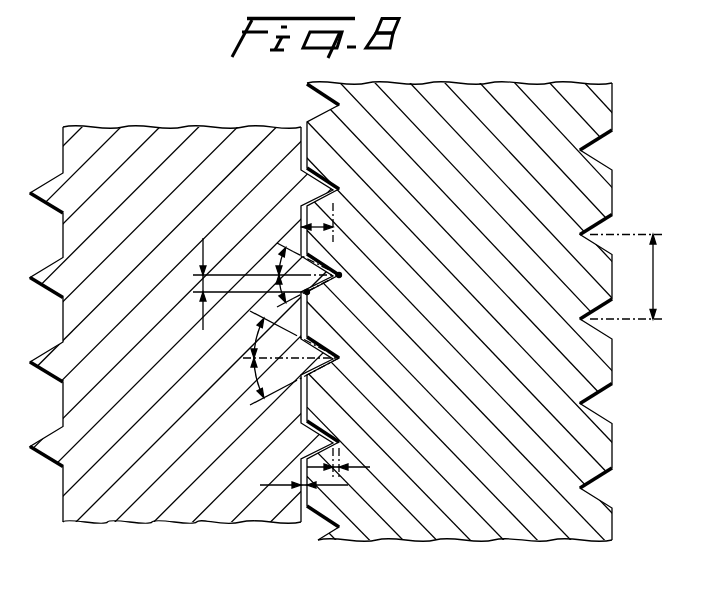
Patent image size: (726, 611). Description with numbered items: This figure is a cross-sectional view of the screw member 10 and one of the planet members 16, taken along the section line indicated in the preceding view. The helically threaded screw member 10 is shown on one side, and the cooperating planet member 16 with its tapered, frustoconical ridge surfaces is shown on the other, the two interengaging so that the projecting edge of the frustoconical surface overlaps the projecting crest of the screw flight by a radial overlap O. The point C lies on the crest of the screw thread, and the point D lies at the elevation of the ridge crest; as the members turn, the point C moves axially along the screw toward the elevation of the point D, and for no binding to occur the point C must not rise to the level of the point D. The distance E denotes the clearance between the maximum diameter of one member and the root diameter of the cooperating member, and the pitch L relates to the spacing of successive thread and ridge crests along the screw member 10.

The first toothed member 16 is at (173, 507).
The screw member 10 is at (485, 523).
The radial overlap O is at (333, 244).
The point D is at (341, 276).
The point C is at (309, 294).
The distance between maximum diameter and root diameter E is at (358, 467).
The tooth pitch L is at (629, 277).